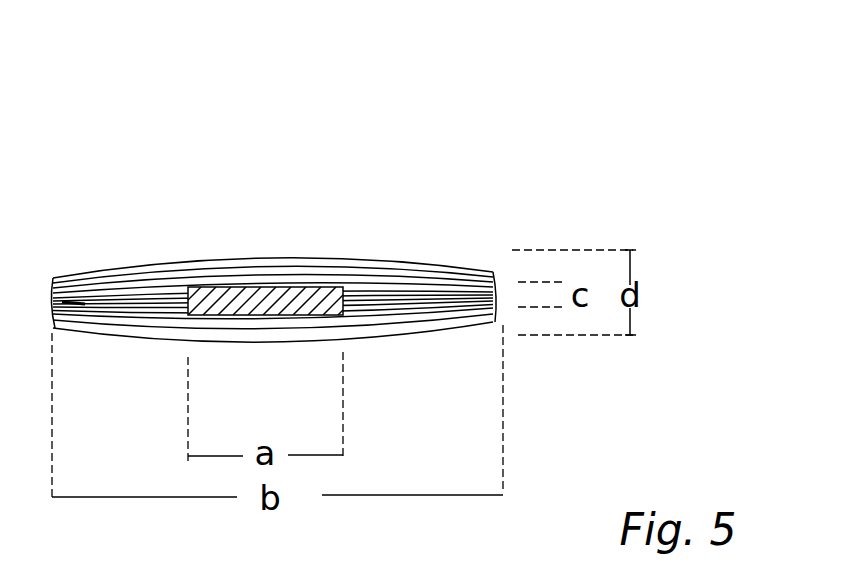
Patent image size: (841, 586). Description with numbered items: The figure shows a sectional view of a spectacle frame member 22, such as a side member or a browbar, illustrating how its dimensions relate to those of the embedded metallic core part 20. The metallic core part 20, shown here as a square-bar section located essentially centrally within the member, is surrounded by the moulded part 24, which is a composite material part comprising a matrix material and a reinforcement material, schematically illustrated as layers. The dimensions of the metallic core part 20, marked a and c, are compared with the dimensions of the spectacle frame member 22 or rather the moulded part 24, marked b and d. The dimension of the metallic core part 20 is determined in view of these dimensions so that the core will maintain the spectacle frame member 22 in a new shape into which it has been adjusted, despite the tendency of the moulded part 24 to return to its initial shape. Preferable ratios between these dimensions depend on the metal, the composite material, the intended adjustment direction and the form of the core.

The metallic core part 20 is at (297, 287).
The spectacle frame member 22 is at (434, 266).
The moulded part 24 is at (155, 285).